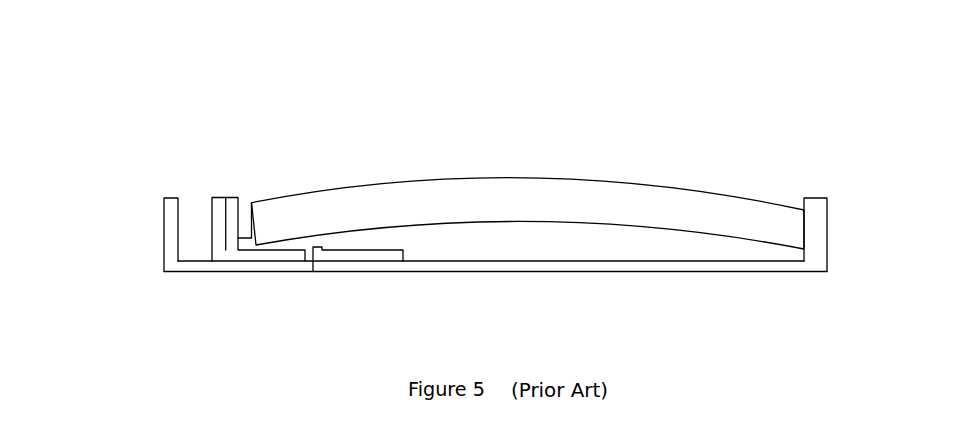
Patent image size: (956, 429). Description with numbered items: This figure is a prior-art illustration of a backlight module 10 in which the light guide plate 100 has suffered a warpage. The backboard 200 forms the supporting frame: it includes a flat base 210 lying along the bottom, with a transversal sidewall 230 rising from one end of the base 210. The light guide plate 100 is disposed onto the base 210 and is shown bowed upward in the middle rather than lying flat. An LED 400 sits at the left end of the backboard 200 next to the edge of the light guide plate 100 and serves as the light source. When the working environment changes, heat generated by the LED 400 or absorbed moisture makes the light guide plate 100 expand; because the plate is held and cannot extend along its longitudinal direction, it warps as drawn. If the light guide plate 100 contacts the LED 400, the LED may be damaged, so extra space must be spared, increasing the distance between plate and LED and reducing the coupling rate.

The backlight module 10 is at (157, 171).
The light guide plate 100 is at (530, 176).
The backboard 200 is at (164, 272).
The base 210 is at (497, 272).
The transversal sidewall 230 is at (164, 222).
The LED 400 is at (238, 237).